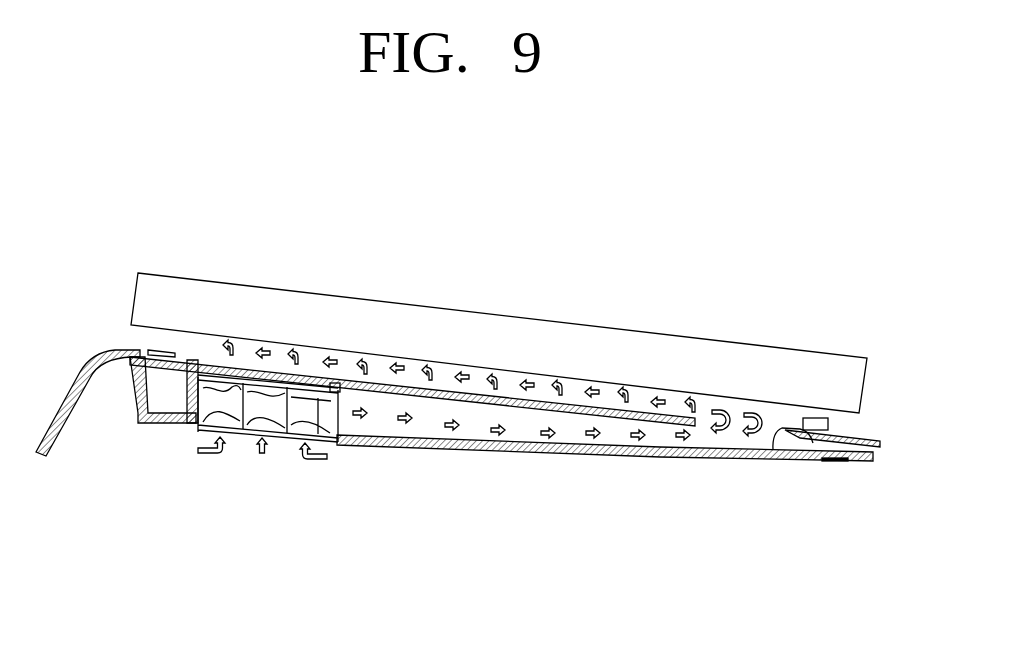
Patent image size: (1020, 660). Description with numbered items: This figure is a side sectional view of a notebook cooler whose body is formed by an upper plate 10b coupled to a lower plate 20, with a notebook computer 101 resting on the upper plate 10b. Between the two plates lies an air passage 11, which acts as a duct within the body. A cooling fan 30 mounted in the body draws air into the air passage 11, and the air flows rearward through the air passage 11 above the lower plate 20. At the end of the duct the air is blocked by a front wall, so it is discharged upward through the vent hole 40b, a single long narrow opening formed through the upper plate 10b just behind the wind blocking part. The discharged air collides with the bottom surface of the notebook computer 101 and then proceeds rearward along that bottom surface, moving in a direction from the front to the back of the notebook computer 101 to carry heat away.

The notebook computer 101 is at (833, 370).
The upper plate 10b is at (481, 401).
The air passage 11 is at (382, 428).
The lower plate 20 is at (592, 457).
The cooling fan 30 is at (202, 393).
The vent hole 40b is at (775, 432).